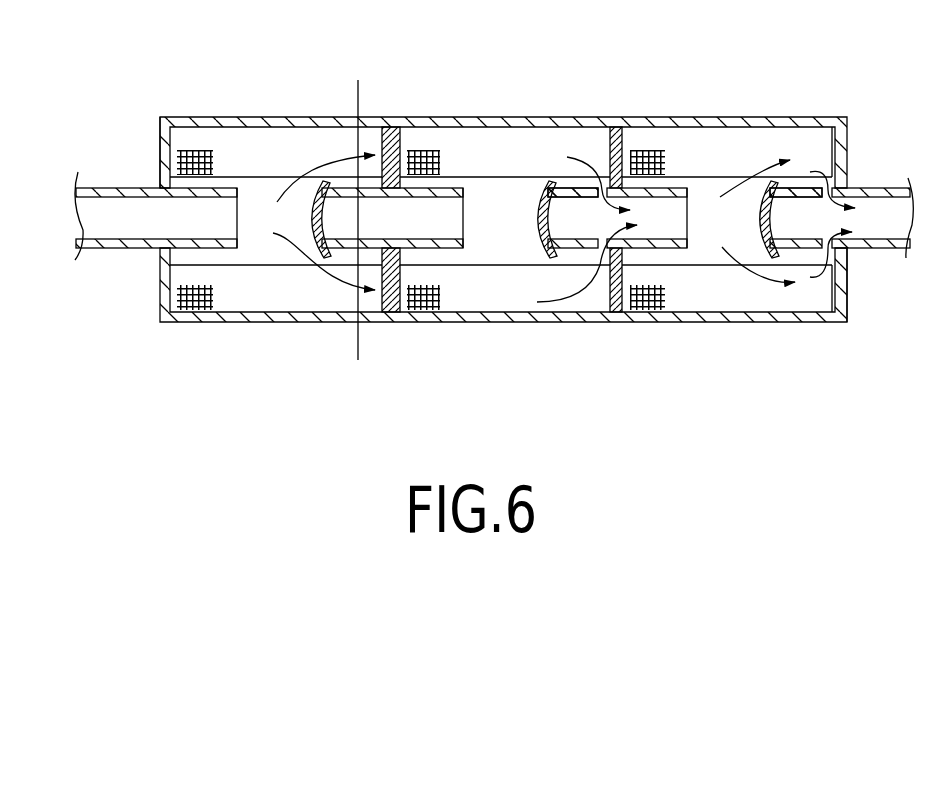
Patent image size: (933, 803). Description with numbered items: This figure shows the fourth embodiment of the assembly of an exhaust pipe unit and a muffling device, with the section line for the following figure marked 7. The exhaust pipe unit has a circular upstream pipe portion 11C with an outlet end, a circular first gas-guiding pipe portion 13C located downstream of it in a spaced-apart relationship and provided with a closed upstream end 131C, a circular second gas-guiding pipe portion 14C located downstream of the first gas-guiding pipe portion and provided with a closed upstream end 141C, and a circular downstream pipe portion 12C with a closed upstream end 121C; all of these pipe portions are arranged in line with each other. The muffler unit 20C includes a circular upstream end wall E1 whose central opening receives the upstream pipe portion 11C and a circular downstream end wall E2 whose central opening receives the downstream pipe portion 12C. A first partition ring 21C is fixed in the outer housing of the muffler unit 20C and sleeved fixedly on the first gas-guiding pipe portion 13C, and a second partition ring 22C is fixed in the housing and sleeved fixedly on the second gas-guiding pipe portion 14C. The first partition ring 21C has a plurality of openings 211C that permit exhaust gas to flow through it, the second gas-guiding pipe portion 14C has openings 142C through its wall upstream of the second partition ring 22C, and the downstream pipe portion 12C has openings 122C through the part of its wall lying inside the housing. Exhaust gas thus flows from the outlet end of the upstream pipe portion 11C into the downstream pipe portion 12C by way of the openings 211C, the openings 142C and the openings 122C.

The muffler unit 20C is at (265, 77).
The first partition ring 21C is at (396, 127).
The second partition ring 22C is at (622, 142).
The openings of first partition ring 211C is at (400, 150).
The upstream pipe portion 11C is at (105, 249).
The downstream pipe portion 12C is at (870, 188).
The first gas-guiding pipe portion 13C is at (452, 248).
The second gas-guiding pipe portion 14C is at (670, 248).
The closed upstream end of first gas-guiding pipe portion 131C is at (312, 236).
The closed upstream end of second gas-guiding pipe portion 141C is at (538, 242).
The closed upstream end of downstream pipe portion 121C is at (765, 242).
The openings of second gas-guiding pipe portion 142C is at (563, 183).
The openings of downstream pipe portion 122C is at (797, 188).
The upstream end wall E1 is at (160, 136).
The downstream end wall E2 is at (847, 290).
The section line VII-VII 7 is at (358, 80).